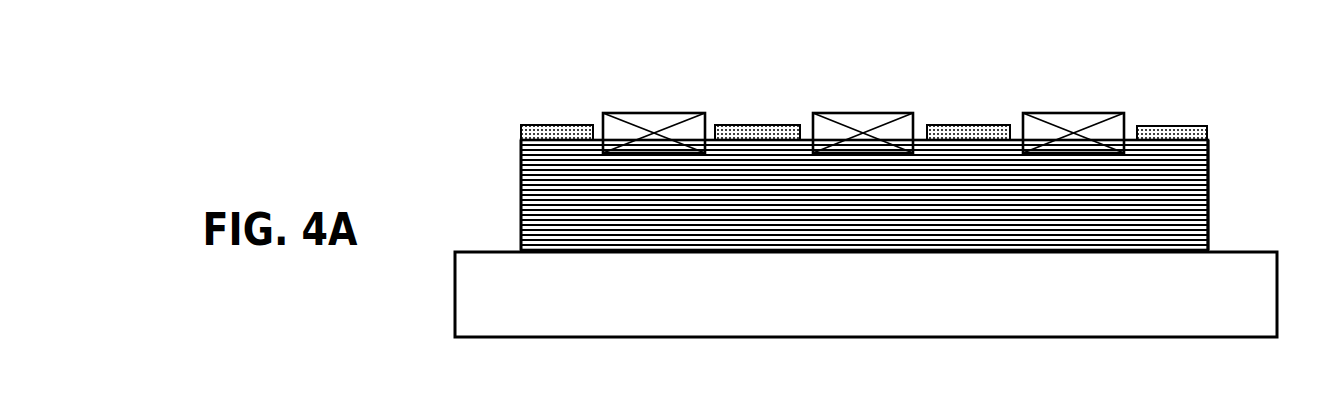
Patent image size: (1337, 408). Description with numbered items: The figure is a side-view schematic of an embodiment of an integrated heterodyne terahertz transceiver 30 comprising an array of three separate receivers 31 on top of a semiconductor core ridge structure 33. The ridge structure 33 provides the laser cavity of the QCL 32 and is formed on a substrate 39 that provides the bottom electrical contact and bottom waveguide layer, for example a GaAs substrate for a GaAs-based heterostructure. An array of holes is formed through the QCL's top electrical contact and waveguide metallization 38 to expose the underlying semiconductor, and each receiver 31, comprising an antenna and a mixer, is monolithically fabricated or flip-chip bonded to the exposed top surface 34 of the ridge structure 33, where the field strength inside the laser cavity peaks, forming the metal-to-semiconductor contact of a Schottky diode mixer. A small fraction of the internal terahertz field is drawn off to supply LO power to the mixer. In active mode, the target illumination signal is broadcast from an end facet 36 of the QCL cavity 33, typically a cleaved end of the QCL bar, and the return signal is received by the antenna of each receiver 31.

The integrated heterodyne terahertz transceiver 30 is at (420, 76).
The receiver 31 is at (647, 92).
The QCL 32 is at (1222, 129).
The semiconductor core ridge structure 33 is at (1078, 208).
The top surface of the ridge structure 34 is at (521, 140).
The end facet 36 is at (521, 212).
The top electrical contact and waveguide metallization 38 is at (1168, 127).
The substrate 39 is at (1201, 308).